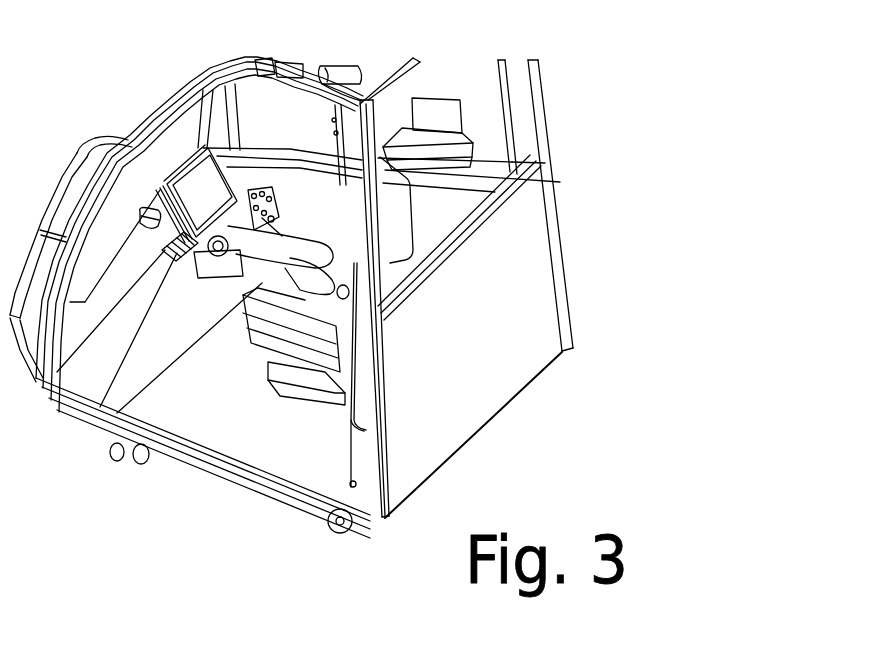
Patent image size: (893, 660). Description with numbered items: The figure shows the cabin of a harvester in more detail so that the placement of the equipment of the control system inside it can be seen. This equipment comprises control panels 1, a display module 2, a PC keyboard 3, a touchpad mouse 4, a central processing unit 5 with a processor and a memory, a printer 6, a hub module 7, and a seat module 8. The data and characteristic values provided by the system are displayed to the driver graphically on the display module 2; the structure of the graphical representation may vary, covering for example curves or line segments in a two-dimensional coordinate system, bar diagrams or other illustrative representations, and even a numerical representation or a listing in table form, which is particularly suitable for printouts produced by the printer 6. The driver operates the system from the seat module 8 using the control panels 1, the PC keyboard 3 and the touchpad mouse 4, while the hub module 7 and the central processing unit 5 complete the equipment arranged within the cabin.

The control panels 1 is at (213, 273).
The display module 2 is at (207, 148).
The PC keyboard 3 is at (100, 408).
The touchpad mouse 4 is at (247, 190).
The central processing unit 5 is at (157, 190).
The printer 6 is at (450, 100).
The hub module 7 is at (264, 188).
The seat module 8 is at (407, 287).